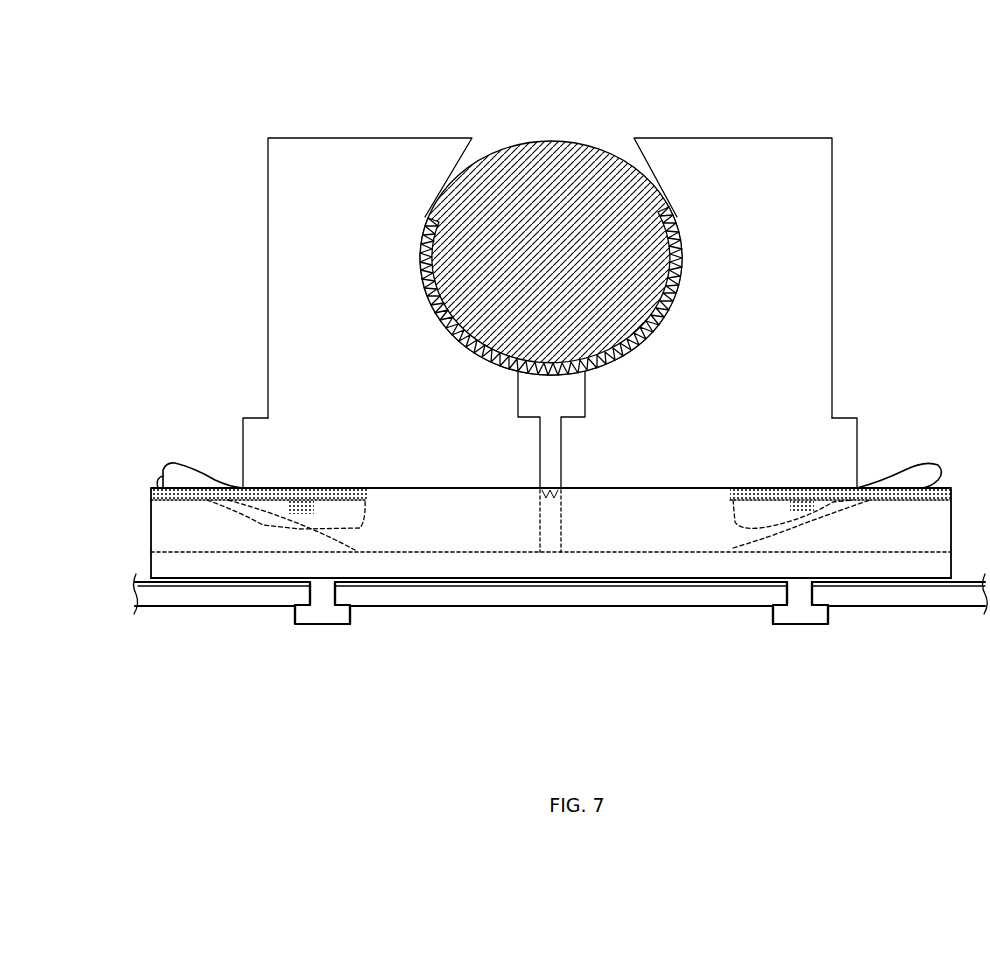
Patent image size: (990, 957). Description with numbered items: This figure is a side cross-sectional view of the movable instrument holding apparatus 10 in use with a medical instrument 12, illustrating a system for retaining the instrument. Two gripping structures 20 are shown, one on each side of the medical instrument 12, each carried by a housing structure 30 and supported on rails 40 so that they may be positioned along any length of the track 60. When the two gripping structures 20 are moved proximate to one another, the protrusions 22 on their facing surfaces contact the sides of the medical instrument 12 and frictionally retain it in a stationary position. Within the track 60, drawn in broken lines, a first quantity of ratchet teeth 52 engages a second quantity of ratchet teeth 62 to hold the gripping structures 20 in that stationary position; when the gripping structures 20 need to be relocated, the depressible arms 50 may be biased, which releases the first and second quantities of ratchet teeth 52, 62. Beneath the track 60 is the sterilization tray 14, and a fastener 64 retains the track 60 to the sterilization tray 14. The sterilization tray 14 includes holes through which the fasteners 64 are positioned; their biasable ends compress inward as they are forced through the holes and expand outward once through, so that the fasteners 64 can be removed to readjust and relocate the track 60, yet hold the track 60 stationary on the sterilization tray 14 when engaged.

The movable instrument holding apparatus 10 is at (690, 44).
The medical instrument 12 is at (546, 170).
The sterilization tray 14 is at (562, 592).
The gripping structure 20 is at (343, 155).
The protrusion 22 is at (420, 232).
The housing structure 30 is at (257, 418).
The rail 40 is at (485, 523).
The depressible arm 50 is at (185, 478).
The first quantity of ratchet teeth 52 is at (317, 513).
The track 60 is at (420, 567).
The second quantity of ratchet teeth 62 is at (168, 488).
The fastener 64 is at (318, 617).